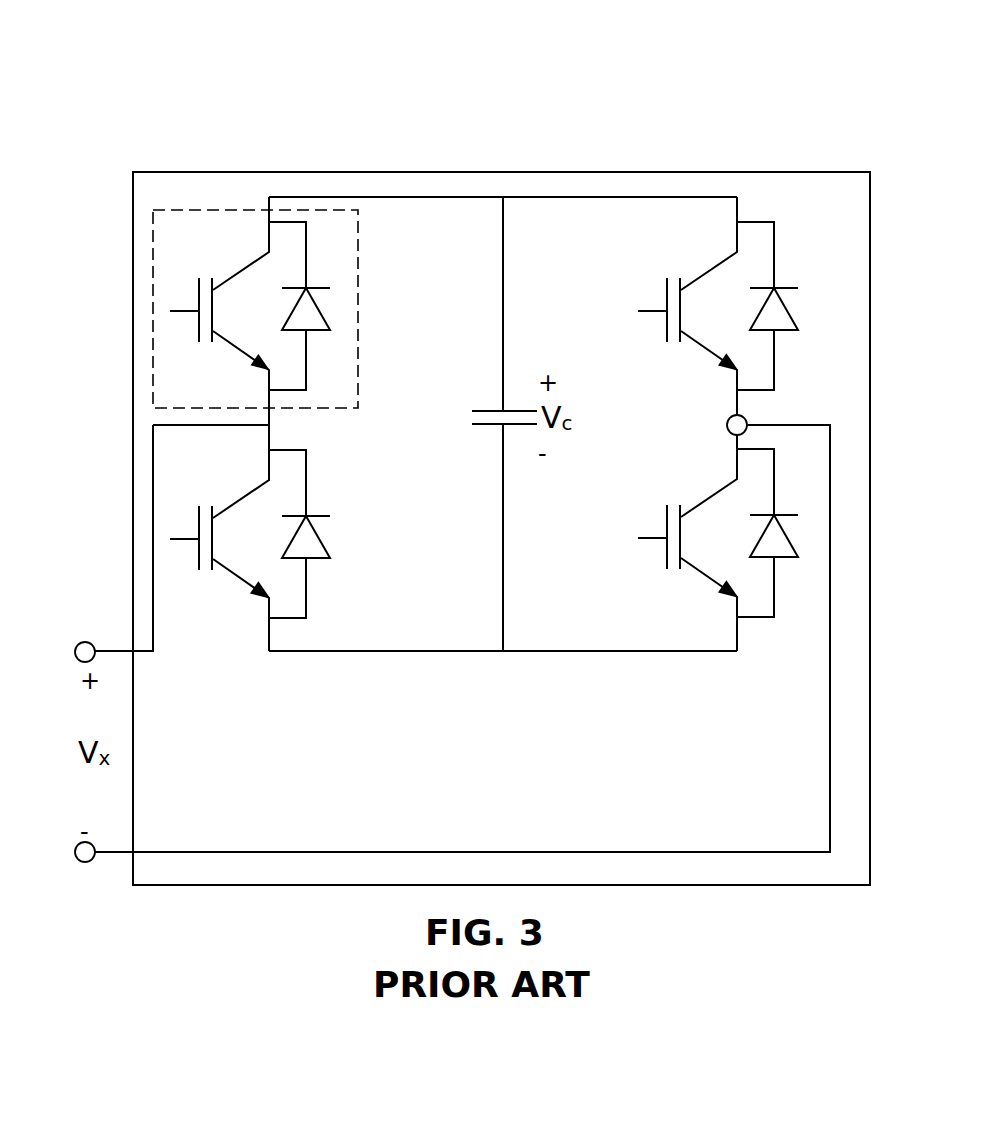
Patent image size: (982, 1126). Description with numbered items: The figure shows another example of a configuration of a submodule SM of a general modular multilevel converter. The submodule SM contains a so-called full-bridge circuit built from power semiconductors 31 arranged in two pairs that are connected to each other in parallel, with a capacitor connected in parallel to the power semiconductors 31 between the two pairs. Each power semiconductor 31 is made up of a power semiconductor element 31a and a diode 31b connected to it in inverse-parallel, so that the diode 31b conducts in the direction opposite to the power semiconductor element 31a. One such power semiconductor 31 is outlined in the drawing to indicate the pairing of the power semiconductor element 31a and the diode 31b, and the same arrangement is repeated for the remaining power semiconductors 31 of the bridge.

The submodule SM is at (448, 150).
The power semiconductor 31 is at (153, 238).
The power semiconductor element 31a is at (240, 270).
The diode 31b is at (323, 288).